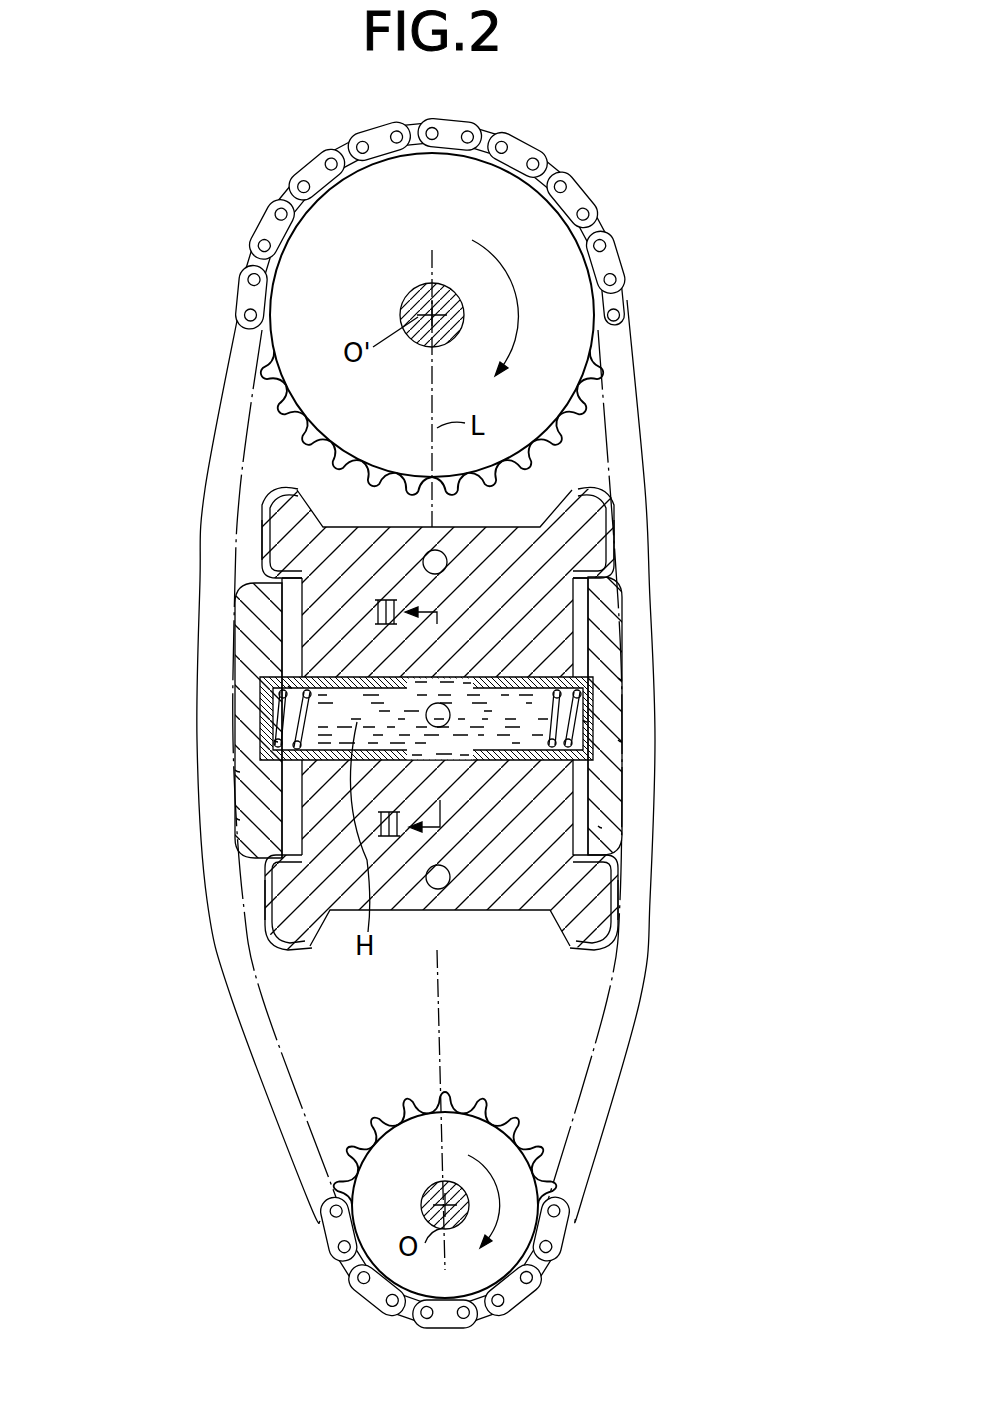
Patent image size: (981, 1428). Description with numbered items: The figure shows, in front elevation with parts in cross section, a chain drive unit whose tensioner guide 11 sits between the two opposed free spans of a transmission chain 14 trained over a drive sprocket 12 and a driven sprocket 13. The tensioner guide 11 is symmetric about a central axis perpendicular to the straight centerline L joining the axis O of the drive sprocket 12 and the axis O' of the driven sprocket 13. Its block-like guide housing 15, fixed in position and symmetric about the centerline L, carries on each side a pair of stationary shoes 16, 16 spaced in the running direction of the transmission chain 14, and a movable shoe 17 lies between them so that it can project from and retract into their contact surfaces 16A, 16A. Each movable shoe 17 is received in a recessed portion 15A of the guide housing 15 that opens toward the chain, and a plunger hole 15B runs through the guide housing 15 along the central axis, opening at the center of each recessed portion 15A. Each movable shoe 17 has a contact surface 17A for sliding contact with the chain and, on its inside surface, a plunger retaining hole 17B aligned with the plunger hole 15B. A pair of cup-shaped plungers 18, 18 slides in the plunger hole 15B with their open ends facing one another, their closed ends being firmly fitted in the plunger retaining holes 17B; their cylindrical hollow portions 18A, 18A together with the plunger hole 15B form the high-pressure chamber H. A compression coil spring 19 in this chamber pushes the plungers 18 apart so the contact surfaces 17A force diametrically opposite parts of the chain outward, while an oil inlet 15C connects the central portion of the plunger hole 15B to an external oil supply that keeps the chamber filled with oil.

The tensioner guide 11 is at (506, 706).
The drive sprocket 12 is at (530, 1225).
The driven sprocket 13 is at (553, 242).
The transmission chain 14 is at (624, 294).
The guide housing 15 is at (526, 522).
The recessed portion 15A is at (300, 860).
The plunger hole 15B is at (452, 677).
The oil inlet 15C is at (441, 724).
The stationary shoe 16 is at (265, 495).
The contact surface 16A is at (264, 540).
The movable shoe 17 is at (240, 640).
The contact surface 17A is at (240, 772).
The plunger retaining hole 17B is at (276, 742).
The cup-shaped plunger 18 is at (240, 820).
The cylindrical hollow portion 18A is at (290, 688).
The compression coil spring 19 is at (283, 698).